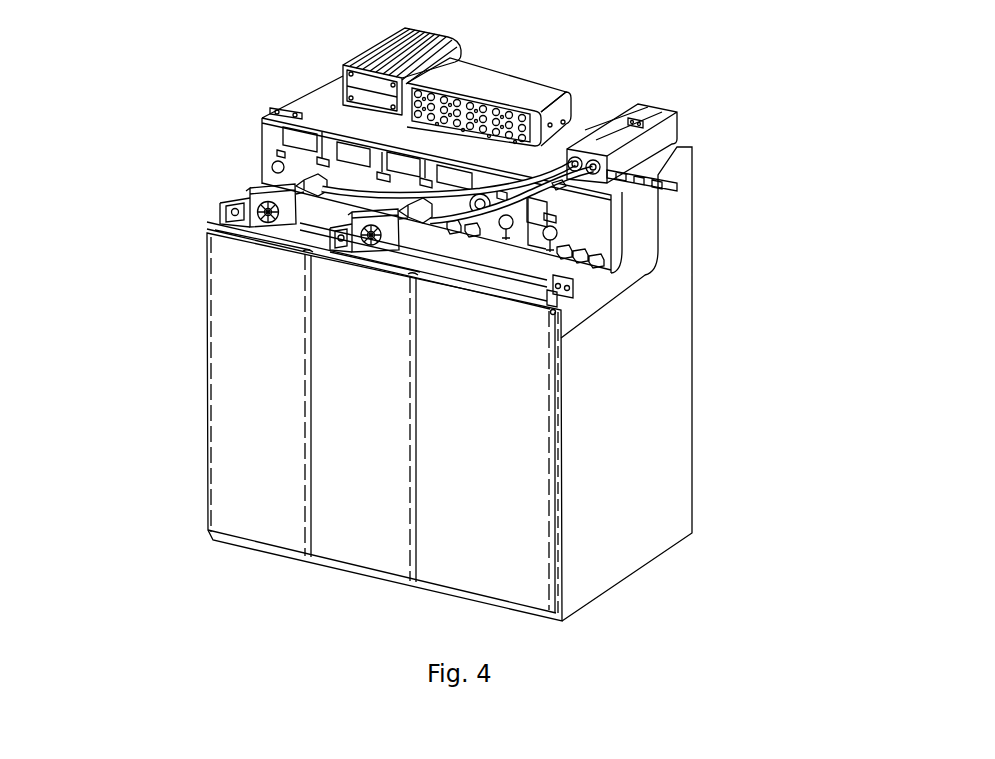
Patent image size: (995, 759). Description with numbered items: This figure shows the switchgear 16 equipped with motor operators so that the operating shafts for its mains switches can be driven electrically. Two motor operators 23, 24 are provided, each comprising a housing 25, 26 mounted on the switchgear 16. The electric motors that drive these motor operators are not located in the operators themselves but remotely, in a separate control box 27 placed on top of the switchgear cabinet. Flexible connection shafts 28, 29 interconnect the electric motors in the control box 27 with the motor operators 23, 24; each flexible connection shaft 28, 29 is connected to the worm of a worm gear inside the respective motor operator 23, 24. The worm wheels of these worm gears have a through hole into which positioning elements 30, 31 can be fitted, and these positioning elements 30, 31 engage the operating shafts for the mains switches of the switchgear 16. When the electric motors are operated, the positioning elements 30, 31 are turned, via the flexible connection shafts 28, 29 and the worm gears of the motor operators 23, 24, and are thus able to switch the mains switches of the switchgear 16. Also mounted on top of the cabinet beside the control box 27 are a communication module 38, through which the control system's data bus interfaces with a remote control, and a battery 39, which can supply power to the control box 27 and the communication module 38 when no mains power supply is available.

The switchgear 16 is at (152, 342).
The motor operator 23 is at (247, 175).
The motor operator 24 is at (415, 240).
The housing 25 is at (260, 197).
The housing 26 is at (365, 217).
The control box 27 is at (640, 105).
The flexible connection shaft 28 is at (522, 172).
The flexible connection shaft 29 is at (558, 188).
The positioning element 30 is at (318, 184).
The positioning element 31 is at (425, 208).
The communication module 38 is at (498, 76).
The battery 39 is at (385, 43).